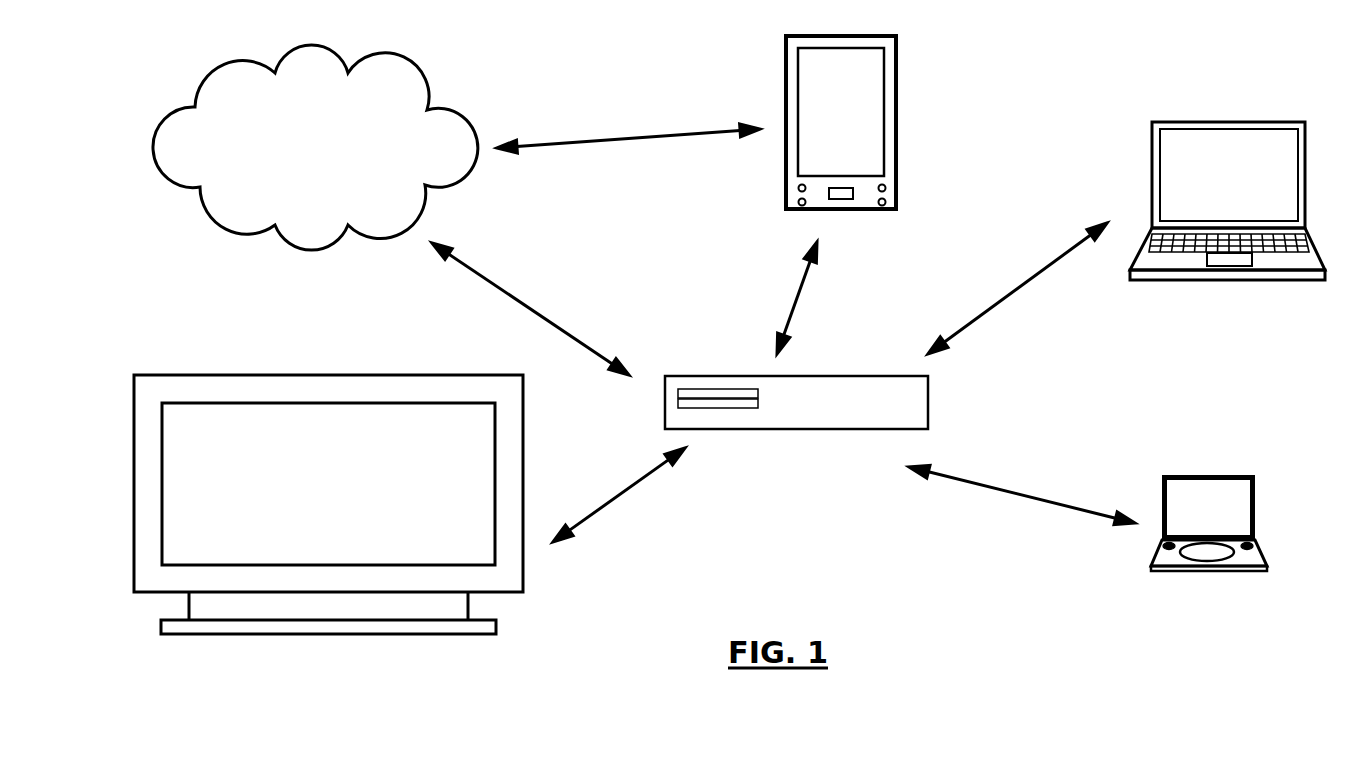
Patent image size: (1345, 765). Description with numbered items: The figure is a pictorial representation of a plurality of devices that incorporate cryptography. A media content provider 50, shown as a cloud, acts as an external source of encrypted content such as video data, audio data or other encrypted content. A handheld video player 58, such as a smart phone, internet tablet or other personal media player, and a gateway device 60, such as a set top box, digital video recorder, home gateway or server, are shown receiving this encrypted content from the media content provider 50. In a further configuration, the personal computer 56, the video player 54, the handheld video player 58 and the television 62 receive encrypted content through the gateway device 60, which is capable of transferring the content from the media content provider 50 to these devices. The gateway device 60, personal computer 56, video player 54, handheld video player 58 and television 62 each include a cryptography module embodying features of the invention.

The media content provider 50 is at (315, 147).
The video player 54 is at (1202, 513).
The personal computer 56 is at (1207, 161).
The handheld video player 58 is at (833, 81).
The gateway device 60 is at (877, 403).
The television 62 is at (207, 439).